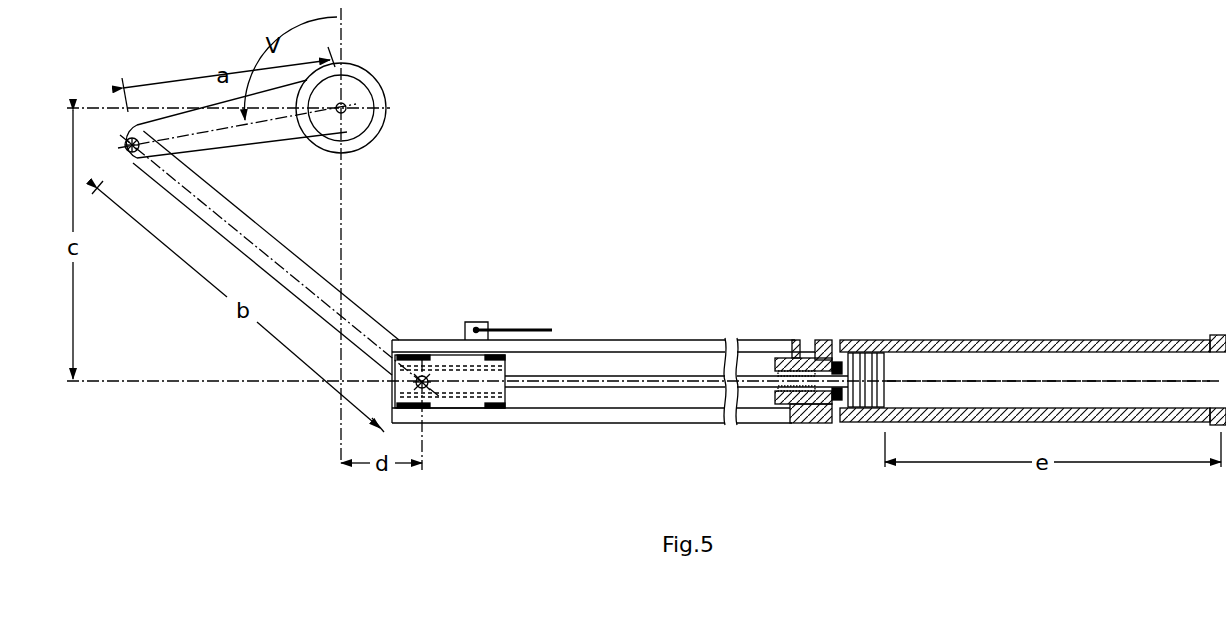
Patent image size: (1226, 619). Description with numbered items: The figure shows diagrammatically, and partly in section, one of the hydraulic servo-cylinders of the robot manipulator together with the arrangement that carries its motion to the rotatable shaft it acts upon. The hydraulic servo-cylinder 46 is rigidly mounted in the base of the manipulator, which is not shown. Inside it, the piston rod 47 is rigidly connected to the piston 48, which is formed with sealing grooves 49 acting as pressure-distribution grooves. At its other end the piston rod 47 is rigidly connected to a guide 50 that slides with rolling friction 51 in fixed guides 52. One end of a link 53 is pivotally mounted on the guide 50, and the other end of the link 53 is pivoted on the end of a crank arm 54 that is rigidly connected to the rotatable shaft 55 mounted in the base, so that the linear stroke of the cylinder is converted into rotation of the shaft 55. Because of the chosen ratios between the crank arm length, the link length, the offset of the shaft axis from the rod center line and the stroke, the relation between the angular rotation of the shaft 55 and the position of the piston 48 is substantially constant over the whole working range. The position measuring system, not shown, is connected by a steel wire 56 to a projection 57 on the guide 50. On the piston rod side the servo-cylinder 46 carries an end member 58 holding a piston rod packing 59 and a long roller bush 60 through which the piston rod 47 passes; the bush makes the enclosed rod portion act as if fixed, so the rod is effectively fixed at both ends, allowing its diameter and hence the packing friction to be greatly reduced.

The hydraulic servo-cylinder 46 is at (970, 343).
The piston rod 47 is at (617, 378).
The piston 48 is at (887, 367).
The sealing grooves 49 is at (863, 353).
The guide 50 is at (452, 373).
The rolling friction 51 is at (418, 352).
The fixed guides 52 is at (548, 417).
The link 53 is at (357, 317).
The crank arm 54 is at (203, 118).
The rotatable shaft 55 is at (373, 78).
The steel wire 56 is at (518, 328).
The projection 57 is at (483, 320).
The end member 58 is at (810, 410).
The piston rod packing 59 is at (832, 360).
The roller bush 60 is at (787, 398).